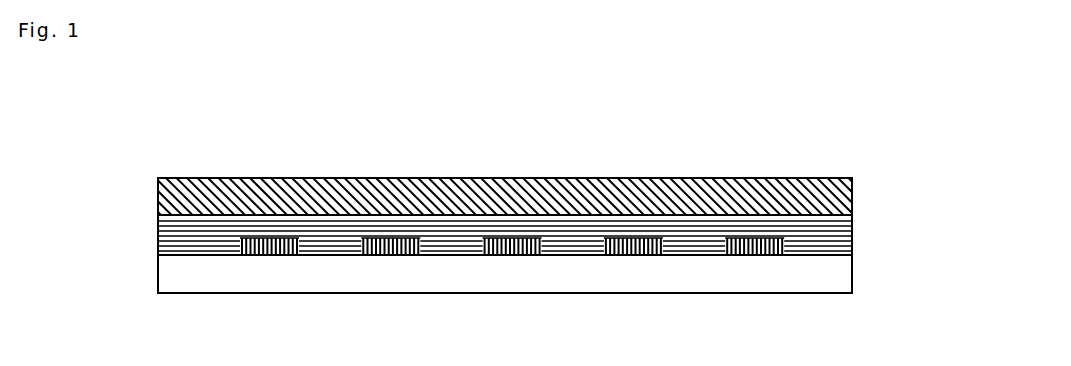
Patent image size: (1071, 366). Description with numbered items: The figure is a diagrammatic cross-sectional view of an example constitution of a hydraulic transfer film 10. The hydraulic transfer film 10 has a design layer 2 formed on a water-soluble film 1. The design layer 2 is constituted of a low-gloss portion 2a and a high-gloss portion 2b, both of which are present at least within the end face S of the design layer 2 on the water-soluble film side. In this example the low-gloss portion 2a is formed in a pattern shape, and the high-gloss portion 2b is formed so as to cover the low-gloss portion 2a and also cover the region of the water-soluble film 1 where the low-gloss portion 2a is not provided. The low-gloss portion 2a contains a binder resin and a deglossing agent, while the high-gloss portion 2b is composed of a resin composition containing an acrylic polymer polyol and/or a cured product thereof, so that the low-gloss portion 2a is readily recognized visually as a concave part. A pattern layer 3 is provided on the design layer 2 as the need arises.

The hydraulic transfer film 10 is at (533, 160).
The water-soluble film 1 is at (818, 282).
The design layer 2 is at (865, 216).
The low-gloss portion 2a is at (515, 248).
The high-gloss portion 2b is at (210, 248).
The pattern layer 3 is at (807, 202).
The end face on the water-soluble film side of the design layer S is at (148, 251).